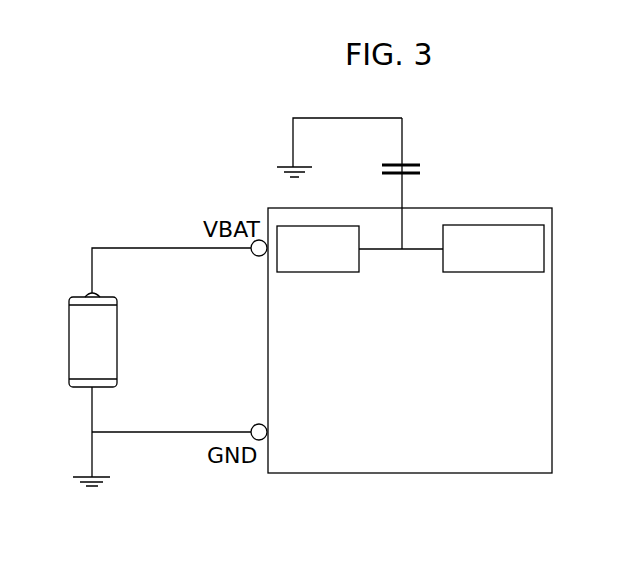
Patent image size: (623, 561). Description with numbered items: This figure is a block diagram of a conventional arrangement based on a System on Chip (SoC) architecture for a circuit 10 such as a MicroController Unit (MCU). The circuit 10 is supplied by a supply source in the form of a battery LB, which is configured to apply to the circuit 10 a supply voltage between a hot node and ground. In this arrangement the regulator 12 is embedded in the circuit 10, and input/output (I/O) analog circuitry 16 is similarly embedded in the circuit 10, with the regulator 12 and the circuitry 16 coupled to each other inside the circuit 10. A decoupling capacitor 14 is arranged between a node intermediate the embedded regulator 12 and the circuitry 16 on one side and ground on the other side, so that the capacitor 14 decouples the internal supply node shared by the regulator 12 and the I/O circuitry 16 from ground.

The circuit 10 is at (530, 335).
The regulator 12 is at (315, 272).
The decoupling capacitor 14 is at (412, 164).
The input/output (I/O) analog circuitry 16 is at (465, 259).
The battery LB is at (60, 330).